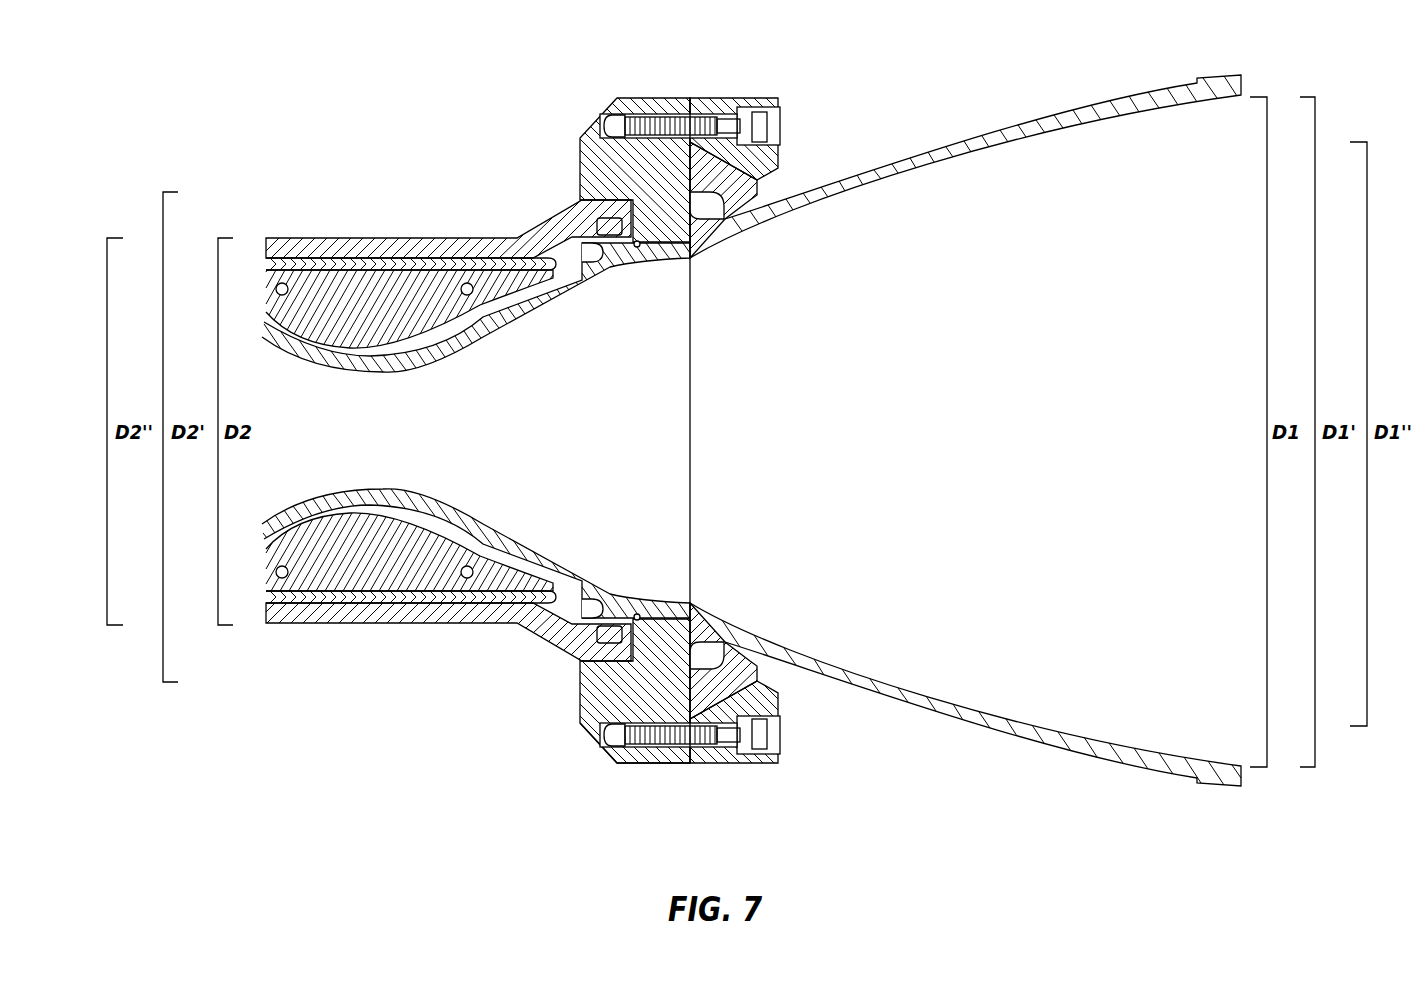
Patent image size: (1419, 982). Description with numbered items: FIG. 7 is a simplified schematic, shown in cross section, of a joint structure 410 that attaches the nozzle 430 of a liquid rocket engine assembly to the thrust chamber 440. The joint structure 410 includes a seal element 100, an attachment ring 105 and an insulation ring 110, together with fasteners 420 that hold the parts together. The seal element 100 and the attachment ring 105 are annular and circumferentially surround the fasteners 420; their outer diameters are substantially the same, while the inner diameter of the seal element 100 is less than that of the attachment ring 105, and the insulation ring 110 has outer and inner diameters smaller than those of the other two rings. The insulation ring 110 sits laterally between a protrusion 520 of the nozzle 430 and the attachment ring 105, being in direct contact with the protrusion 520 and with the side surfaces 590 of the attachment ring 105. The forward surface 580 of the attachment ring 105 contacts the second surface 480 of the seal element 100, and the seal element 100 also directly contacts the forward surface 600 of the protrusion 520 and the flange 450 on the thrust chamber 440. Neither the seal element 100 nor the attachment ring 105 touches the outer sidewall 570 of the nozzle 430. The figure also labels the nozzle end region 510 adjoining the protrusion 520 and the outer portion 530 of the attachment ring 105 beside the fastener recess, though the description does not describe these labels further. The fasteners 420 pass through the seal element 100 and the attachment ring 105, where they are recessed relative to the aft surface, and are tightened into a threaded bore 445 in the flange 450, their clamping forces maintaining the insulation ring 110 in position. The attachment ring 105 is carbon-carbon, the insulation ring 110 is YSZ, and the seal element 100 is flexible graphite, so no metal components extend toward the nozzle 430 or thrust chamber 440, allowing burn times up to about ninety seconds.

The seal element 100 is at (690, 764).
The attachment ring 105 is at (746, 768).
The insulation ring 110 is at (727, 641).
The joint structure 410 is at (695, 80).
The fasteners 420 is at (778, 745).
The nozzle 430 is at (1054, 745).
The thrust chamber 440 is at (428, 625).
The threaded bore 445 is at (610, 757).
The flange 450 is at (581, 722).
The second surface 480 is at (713, 98).
The nozzle flange 510 is at (758, 185).
The protrusion 520 is at (580, 155).
The flange outer portion 530 is at (788, 98).
The outer sidewall 570 is at (1013, 127).
The forward surface 580 is at (687, 98).
The side surfaces 590 is at (780, 148).
The forward surface 600 is at (583, 200).